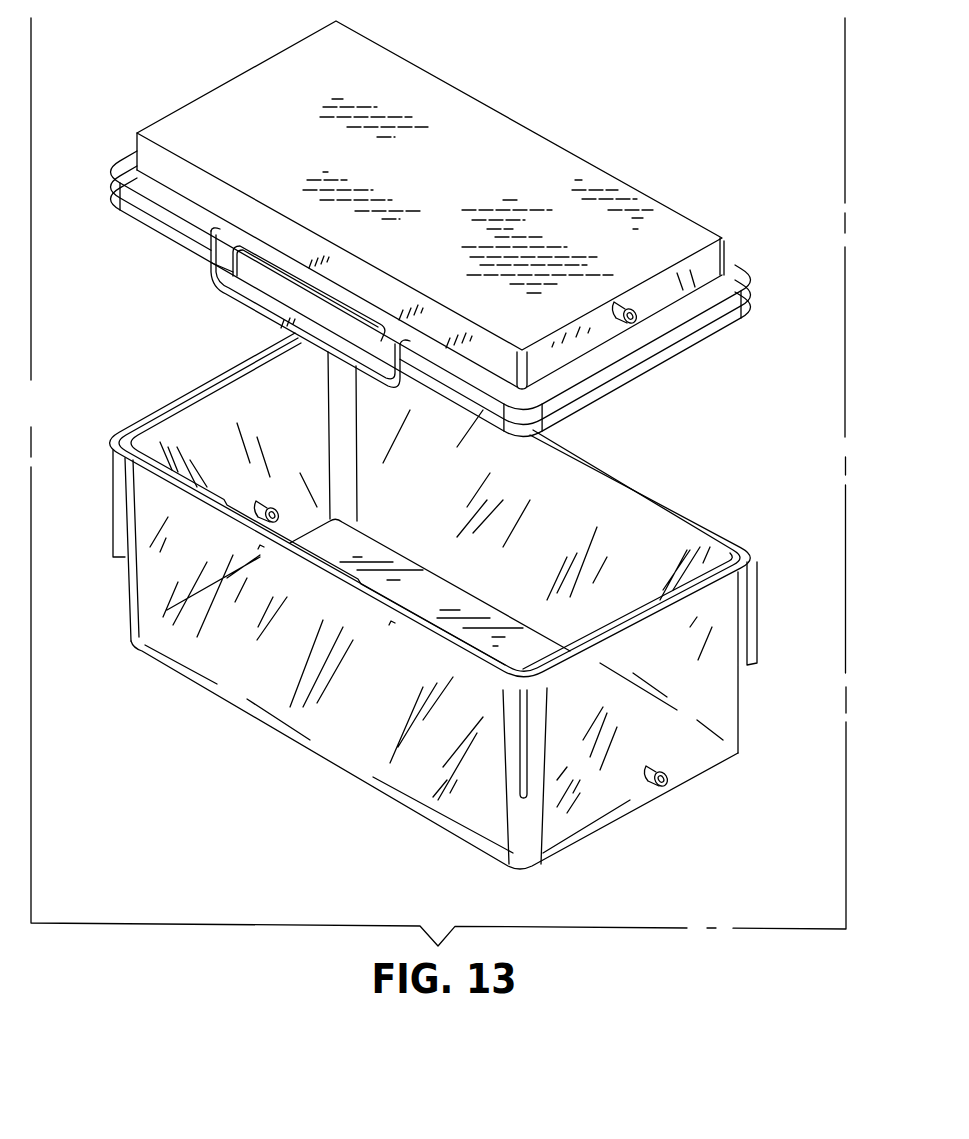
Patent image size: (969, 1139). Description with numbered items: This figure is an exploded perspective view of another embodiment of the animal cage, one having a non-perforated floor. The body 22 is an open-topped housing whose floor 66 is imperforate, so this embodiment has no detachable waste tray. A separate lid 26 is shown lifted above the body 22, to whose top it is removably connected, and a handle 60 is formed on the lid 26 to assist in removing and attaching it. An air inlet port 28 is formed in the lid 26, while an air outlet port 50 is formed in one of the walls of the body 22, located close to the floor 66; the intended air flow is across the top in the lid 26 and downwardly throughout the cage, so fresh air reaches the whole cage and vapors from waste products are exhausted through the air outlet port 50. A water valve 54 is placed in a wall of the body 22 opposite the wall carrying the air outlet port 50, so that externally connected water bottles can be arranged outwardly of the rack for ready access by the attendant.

The body 22 is at (756, 600).
The lid 26 is at (652, 195).
The air inlet port 28 is at (633, 310).
The air outlet port 50 is at (670, 790).
The water valve 54 is at (257, 507).
The handle 60 is at (225, 285).
The floor 66 is at (497, 617).